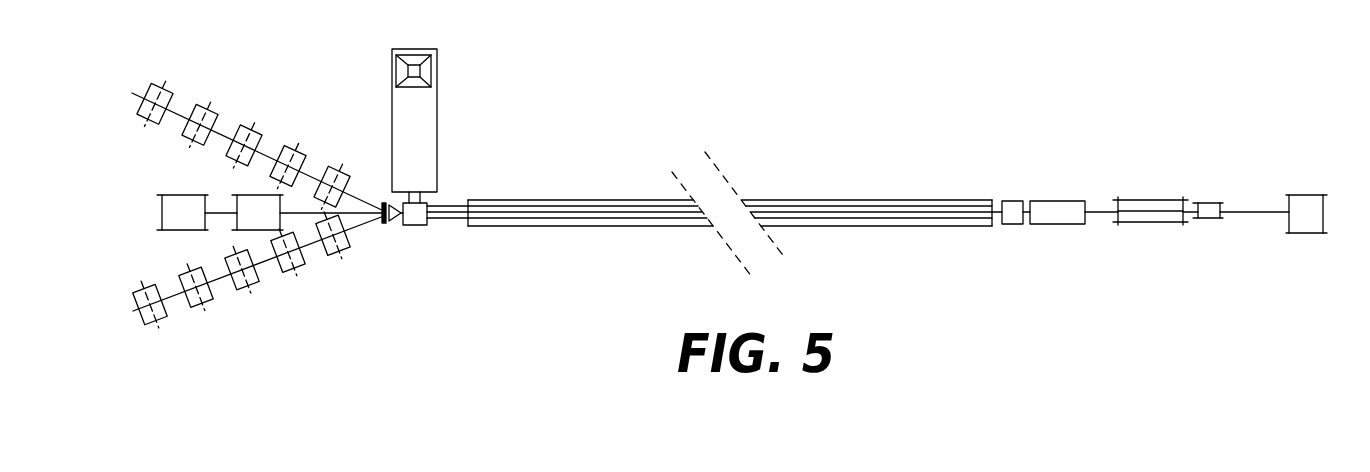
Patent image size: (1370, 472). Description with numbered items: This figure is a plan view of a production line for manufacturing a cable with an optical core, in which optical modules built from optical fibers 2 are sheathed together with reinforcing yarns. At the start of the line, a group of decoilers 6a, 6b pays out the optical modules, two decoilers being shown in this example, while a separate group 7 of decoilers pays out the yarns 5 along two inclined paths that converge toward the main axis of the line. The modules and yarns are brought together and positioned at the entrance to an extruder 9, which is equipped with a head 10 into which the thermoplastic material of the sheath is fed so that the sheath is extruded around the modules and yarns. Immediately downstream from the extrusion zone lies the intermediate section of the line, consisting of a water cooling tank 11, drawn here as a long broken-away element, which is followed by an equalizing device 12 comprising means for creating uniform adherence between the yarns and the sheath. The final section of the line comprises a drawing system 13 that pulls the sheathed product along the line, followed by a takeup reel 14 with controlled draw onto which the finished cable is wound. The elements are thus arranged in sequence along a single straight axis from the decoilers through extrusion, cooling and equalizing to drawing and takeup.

The optical fibers 2 is at (355, 215).
The yarns 5 is at (367, 188).
The decoiler 6a is at (175, 210).
The decoiler 6b is at (257, 224).
The group of decoilers of the yarns 7 is at (271, 143).
The extruder 9 is at (418, 110).
The head 10 is at (417, 217).
The water cooling tank 11 is at (908, 228).
The equalizing device 12 is at (1063, 232).
The drawing system 13 is at (1153, 200).
The takeup reel 14 is at (1307, 228).